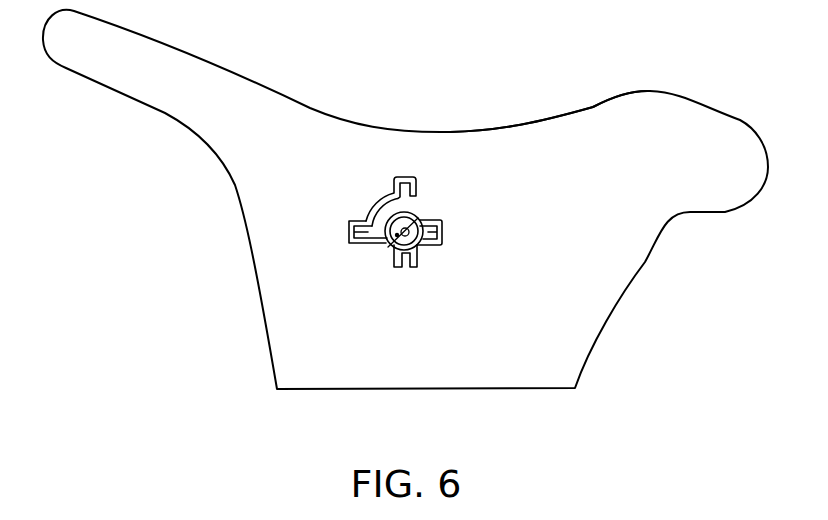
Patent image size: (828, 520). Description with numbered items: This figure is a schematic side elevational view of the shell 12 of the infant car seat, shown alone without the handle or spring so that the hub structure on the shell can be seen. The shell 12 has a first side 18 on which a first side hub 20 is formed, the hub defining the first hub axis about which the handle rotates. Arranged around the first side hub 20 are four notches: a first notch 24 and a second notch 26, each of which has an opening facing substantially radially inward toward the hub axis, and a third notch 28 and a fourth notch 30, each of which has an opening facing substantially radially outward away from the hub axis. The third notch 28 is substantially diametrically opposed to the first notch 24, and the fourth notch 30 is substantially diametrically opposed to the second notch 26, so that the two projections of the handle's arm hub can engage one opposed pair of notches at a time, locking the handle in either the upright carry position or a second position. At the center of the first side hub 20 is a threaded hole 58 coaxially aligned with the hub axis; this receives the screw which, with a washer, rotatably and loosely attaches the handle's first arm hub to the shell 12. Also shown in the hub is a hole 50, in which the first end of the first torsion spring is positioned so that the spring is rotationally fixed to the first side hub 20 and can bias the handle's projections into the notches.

The shell 12 is at (640, 300).
The first side 18 is at (580, 113).
The first side hub 20 is at (423, 209).
The first notch 24 is at (394, 180).
The second notch 26 is at (349, 235).
The third notch 28 is at (405, 268).
The fourth notch 30 is at (442, 232).
The hole 50 is at (390, 250).
The threaded hole 58 is at (424, 220).